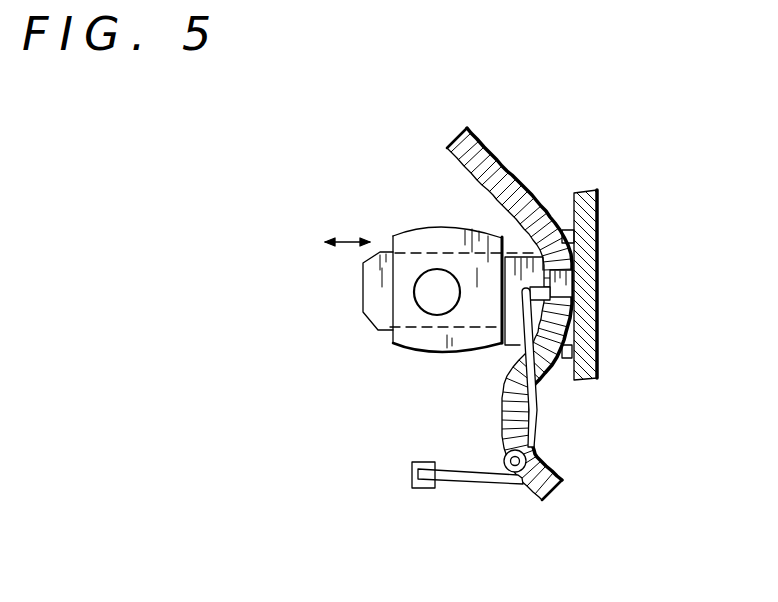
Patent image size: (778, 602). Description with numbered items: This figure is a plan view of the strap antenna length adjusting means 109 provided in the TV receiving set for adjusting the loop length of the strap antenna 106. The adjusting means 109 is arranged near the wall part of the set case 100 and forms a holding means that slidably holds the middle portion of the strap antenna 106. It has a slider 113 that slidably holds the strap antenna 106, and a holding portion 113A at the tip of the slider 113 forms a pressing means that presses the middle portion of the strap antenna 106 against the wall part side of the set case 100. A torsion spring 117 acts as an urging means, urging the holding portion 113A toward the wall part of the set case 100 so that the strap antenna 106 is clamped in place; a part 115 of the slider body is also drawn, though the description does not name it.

The set case 100 is at (597, 269).
The strap antenna 106 is at (500, 157).
The strap antenna length adjusting means 109 is at (400, 219).
The slider 113 is at (368, 288).
The holding portion 113A is at (597, 318).
The lower portion of holder 115 is at (413, 345).
The torsion spring 117 is at (460, 482).